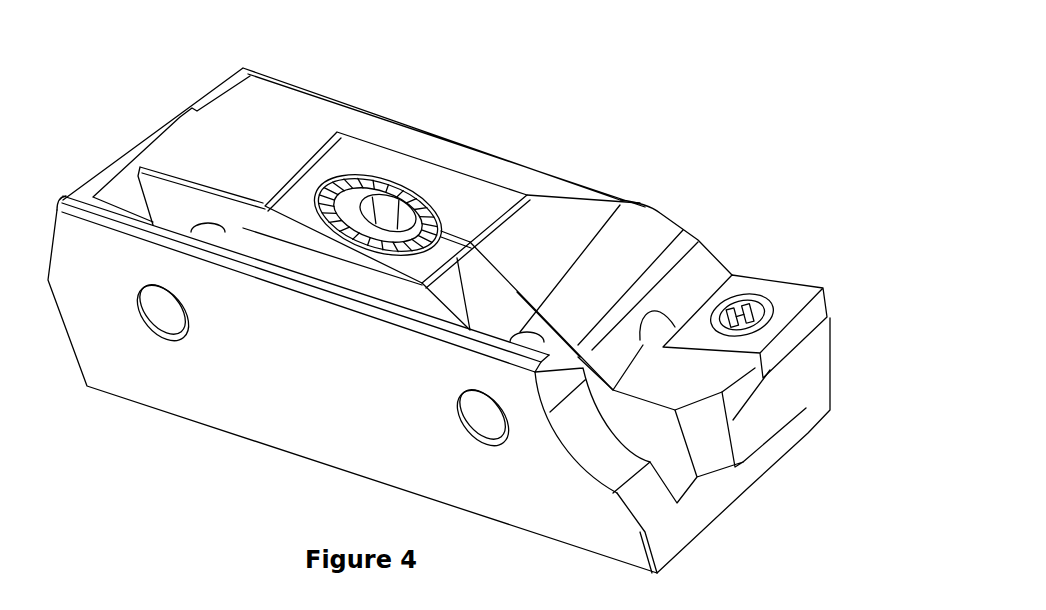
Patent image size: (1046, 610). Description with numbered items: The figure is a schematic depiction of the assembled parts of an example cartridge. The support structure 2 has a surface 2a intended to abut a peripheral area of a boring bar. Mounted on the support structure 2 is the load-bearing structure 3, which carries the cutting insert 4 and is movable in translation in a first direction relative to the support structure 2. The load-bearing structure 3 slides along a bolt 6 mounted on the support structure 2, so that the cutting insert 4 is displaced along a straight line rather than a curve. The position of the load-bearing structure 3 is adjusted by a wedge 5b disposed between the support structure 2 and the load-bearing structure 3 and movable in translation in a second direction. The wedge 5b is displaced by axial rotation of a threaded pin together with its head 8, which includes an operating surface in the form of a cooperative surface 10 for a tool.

The support structure 2 is at (705, 495).
The surface 2a is at (305, 387).
The load-bearing structure 3 is at (628, 247).
The cutting insert 4 is at (793, 298).
The wedge 5b is at (348, 165).
The bolt 6 is at (210, 233).
The head 8 is at (420, 197).
The cooperative surface 10 is at (373, 217).